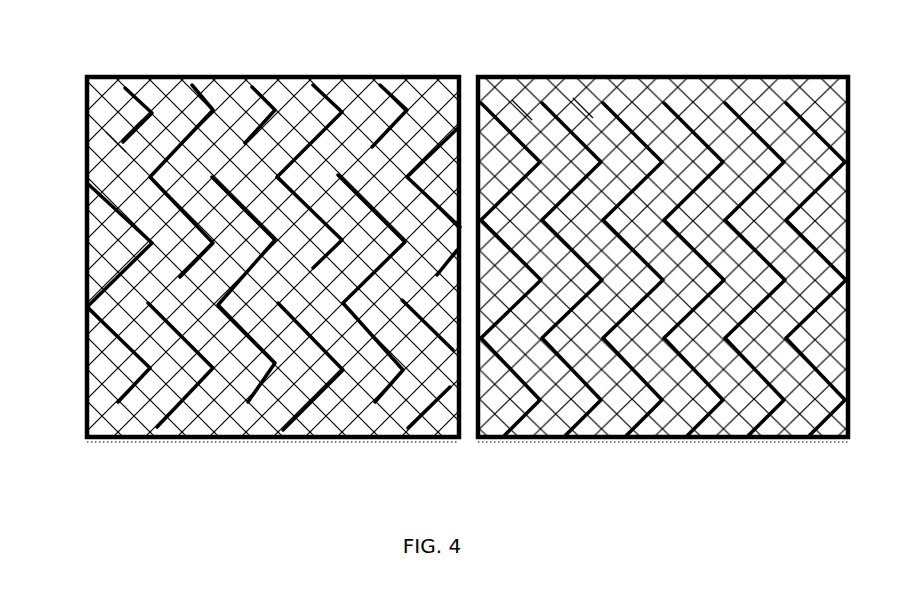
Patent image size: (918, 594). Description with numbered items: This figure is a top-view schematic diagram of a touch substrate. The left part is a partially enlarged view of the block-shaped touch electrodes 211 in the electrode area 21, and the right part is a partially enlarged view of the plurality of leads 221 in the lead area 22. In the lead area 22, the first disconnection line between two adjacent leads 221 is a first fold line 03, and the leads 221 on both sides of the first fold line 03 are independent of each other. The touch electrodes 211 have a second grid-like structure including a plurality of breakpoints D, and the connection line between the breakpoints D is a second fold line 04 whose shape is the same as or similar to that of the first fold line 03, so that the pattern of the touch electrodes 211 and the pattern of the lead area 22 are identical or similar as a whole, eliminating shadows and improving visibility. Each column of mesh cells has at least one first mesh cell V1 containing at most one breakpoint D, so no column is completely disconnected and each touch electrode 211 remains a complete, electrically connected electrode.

The electrode area 21 is at (459, 445).
The lead area 22 is at (478, 445).
The second fold line 04 is at (192, 78).
The touch electrode 211 is at (282, 78).
The lead 221 is at (522, 110).
The first fold line 03 is at (545, 108).
The breakpoint D is at (123, 123).
The first mesh cell V1 is at (113, 140).